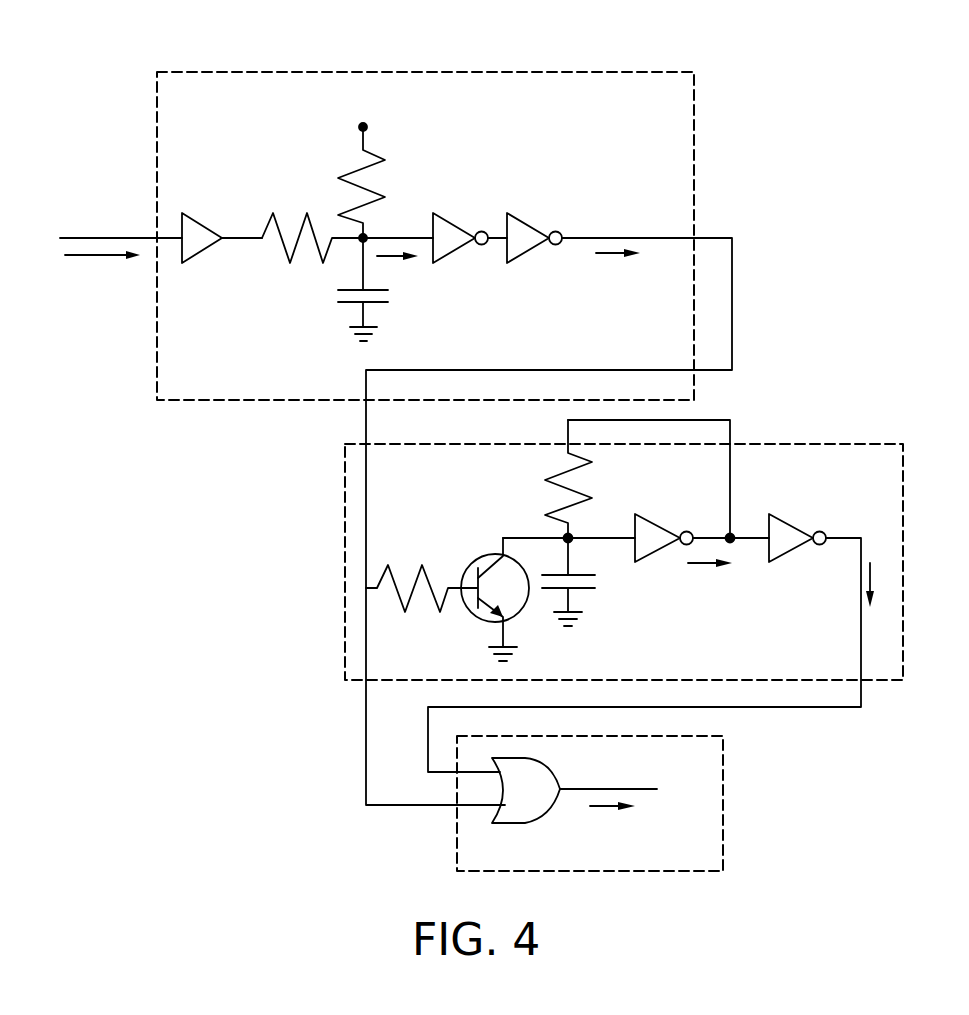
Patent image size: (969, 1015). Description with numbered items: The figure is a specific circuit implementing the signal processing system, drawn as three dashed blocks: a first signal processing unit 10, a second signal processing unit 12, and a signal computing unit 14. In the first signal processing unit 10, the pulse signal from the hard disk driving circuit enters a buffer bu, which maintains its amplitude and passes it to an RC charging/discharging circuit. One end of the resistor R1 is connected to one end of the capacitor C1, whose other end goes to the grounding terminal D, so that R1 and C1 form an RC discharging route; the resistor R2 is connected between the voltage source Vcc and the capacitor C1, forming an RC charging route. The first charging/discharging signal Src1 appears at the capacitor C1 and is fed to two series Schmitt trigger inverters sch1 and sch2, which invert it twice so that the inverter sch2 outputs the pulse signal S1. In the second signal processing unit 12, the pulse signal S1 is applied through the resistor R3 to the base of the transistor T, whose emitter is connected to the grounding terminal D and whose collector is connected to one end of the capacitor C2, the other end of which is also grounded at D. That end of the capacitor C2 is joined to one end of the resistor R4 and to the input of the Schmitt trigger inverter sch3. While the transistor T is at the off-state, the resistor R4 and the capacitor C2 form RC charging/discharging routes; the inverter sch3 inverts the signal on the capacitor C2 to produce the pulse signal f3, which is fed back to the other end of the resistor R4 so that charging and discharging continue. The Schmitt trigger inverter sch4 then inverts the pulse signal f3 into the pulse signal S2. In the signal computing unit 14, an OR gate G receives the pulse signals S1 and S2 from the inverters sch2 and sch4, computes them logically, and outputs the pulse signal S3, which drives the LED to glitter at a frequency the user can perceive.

The first signal processing unit 10 is at (580, 72).
The second signal processing unit 12 is at (810, 444).
The signal computing unit 14 is at (723, 802).
The buffer bu is at (205, 226).
The resistor R1 is at (312, 226).
The resistor R2 is at (375, 182).
The resistor R3 is at (413, 574).
The resistor R4 is at (622, 479).
The capacitor C1 is at (377, 282).
The capacitor C2 is at (571, 575).
The Schmitt trigger inverter sch1 is at (470, 228).
The Schmitt trigger inverter sch2 is at (533, 228).
The Schmitt trigger inverter sch3 is at (694, 526).
The Schmitt trigger inverter sch4 is at (793, 526).
The transistor T is at (470, 612).
The OR gate G is at (488, 822).
The grounding terminal D is at (462, 496).
The voltage source Vcc is at (360, 115).
The first charging/discharging signal Src1 is at (398, 270).
The pulse signal S1 is at (549, 521).
The pulse signal S2 is at (666, 655).
The pulse signal S3 is at (608, 811).
The pulse signal f3 is at (710, 577).